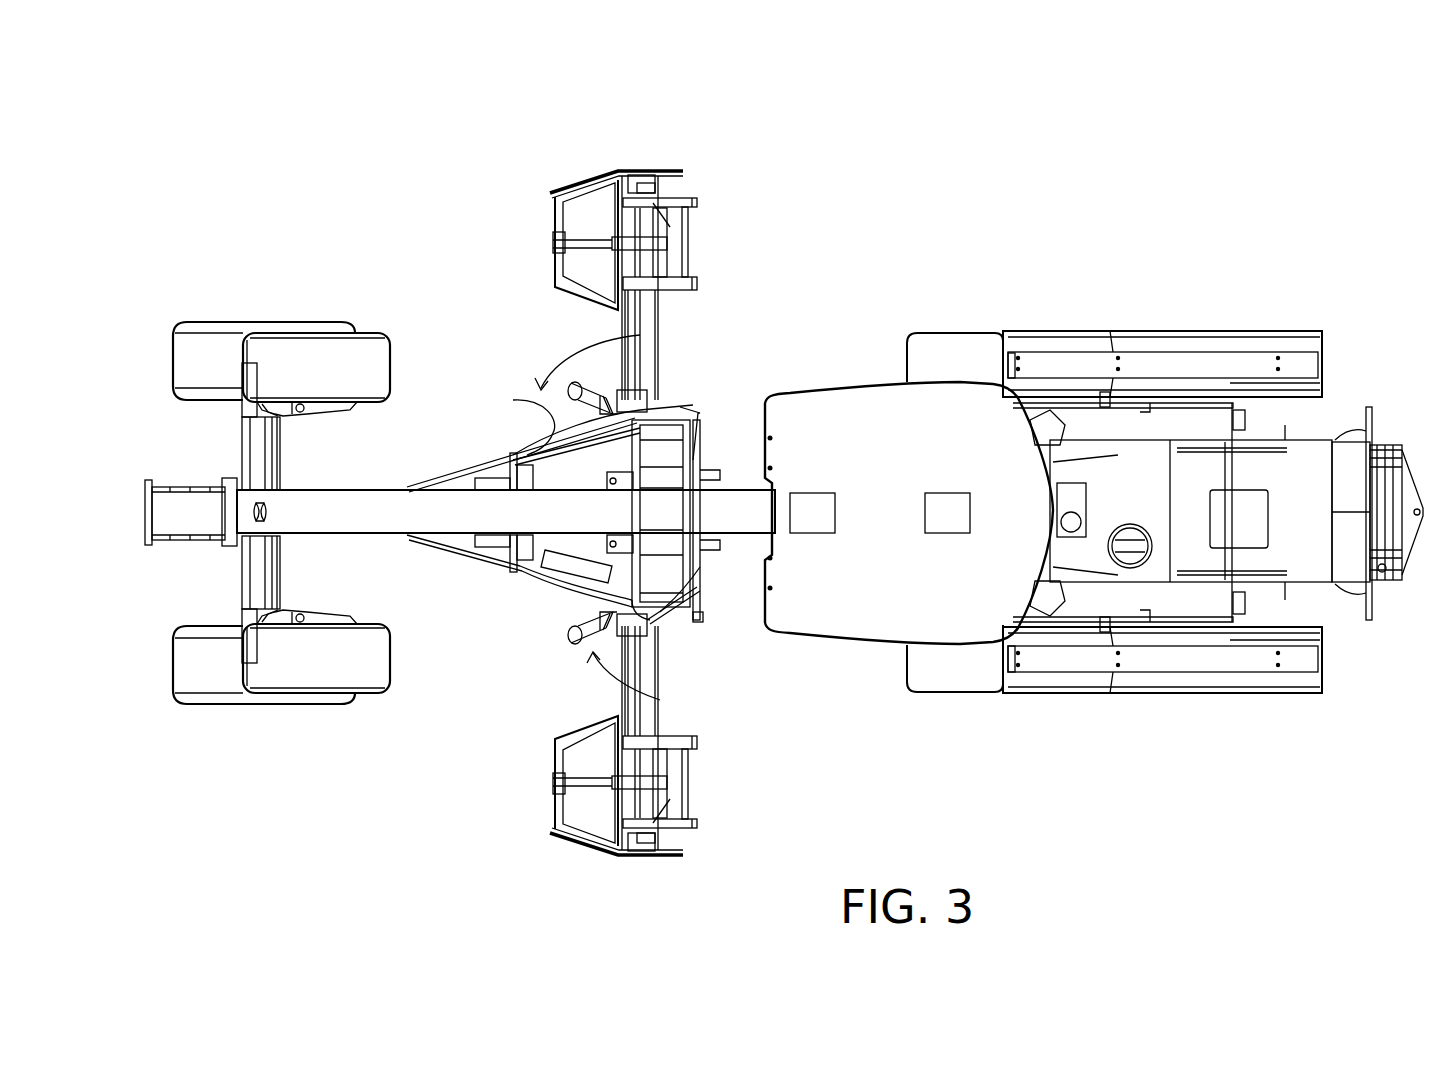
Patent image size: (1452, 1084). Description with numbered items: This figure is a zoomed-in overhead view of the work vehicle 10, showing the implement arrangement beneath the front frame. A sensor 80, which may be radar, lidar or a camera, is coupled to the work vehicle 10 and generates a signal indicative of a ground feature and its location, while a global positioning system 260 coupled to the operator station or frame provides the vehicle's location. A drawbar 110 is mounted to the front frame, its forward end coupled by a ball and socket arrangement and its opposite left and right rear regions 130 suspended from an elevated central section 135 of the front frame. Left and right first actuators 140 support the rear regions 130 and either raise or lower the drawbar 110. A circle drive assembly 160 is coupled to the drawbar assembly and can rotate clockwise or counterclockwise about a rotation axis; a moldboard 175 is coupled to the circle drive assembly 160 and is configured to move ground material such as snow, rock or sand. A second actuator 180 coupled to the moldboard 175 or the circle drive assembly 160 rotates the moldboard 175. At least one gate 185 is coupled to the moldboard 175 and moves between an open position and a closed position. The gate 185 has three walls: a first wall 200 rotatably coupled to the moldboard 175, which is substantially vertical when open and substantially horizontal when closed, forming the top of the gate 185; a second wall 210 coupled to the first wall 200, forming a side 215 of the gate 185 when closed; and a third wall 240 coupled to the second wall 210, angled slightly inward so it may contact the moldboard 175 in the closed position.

The work vehicle 10 is at (1328, 219).
The sensor 80 is at (822, 492).
The drawbar 110 is at (553, 587).
The left and right rear regions 130 is at (640, 335).
The elevated central section 135 is at (307, 517).
The left and right first actuators 140 is at (576, 388).
The circle drive assembly 160 is at (548, 423).
The moldboard 175 is at (617, 335).
The second actuator 180 is at (683, 600).
The gate 185 is at (607, 128).
The first wall 200 is at (558, 213).
The second wall 210 is at (585, 180).
The side 215 is at (647, 172).
The third wall 240 is at (680, 170).
The global positioning system 260 is at (955, 492).